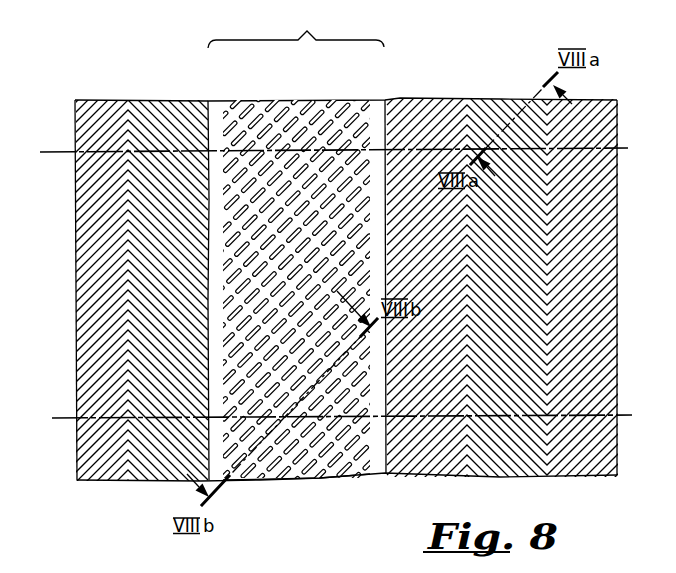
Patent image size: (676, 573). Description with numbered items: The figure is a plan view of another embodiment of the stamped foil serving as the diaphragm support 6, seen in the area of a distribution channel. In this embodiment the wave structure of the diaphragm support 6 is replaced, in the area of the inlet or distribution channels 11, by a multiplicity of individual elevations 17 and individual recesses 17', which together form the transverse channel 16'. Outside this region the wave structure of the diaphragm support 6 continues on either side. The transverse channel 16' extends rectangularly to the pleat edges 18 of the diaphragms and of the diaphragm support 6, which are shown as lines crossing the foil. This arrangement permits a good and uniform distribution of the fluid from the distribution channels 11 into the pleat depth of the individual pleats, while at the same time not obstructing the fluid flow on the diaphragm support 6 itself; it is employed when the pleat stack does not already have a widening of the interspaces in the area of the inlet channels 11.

The diaphragm support 6 is at (447, 64).
The distribution channels 11 is at (296, 24).
The transverse channel 16' is at (296, 514).
The individual elevations 17 is at (338, 296).
The individual recesses 17' is at (338, 296).
The pleat edges 18 is at (47, 150).